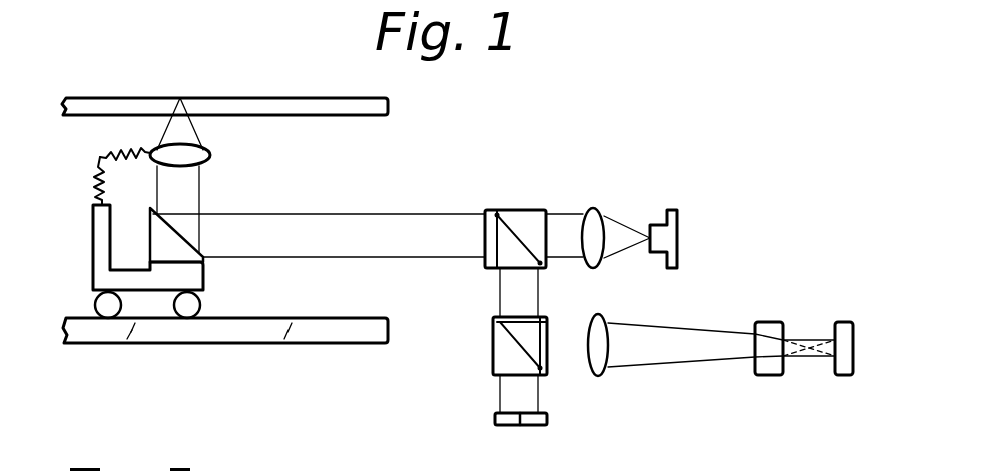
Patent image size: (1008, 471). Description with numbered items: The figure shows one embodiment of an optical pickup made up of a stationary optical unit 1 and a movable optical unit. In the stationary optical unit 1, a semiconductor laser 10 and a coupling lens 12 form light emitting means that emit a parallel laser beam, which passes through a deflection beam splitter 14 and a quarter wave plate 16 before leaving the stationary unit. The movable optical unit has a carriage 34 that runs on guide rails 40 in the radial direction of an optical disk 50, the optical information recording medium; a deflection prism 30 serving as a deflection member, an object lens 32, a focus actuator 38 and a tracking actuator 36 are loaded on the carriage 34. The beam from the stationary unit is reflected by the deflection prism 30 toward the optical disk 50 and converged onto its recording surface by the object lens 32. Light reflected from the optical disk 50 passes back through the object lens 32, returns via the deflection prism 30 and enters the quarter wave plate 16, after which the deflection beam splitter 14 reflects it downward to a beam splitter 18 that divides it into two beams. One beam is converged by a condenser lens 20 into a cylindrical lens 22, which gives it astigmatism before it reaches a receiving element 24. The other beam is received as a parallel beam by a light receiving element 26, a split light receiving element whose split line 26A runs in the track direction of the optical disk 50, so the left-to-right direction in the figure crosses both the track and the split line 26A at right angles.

The stationary optical unit 1 is at (686, 188).
The semiconductor laser 10 is at (678, 240).
The coupling lens 12 is at (597, 208).
The deflection beam splitter 14 is at (537, 208).
The quarter wave plate 16 is at (491, 209).
The beam splitter 18 is at (493, 350).
The condenser lens 20 is at (603, 320).
The cylindrical lens 22 is at (768, 322).
The receiving element 24 is at (843, 322).
The light receiving element 26 is at (550, 419).
The split line 26A is at (528, 427).
The deflection prism 30 is at (150, 234).
The object lens 32 is at (210, 155).
The carriage 34 is at (197, 277).
The tracking actuator 36 is at (120, 150).
The focus actuator 38 is at (97, 175).
The guide rails 40 is at (332, 325).
The optical disk 50 is at (301, 107).